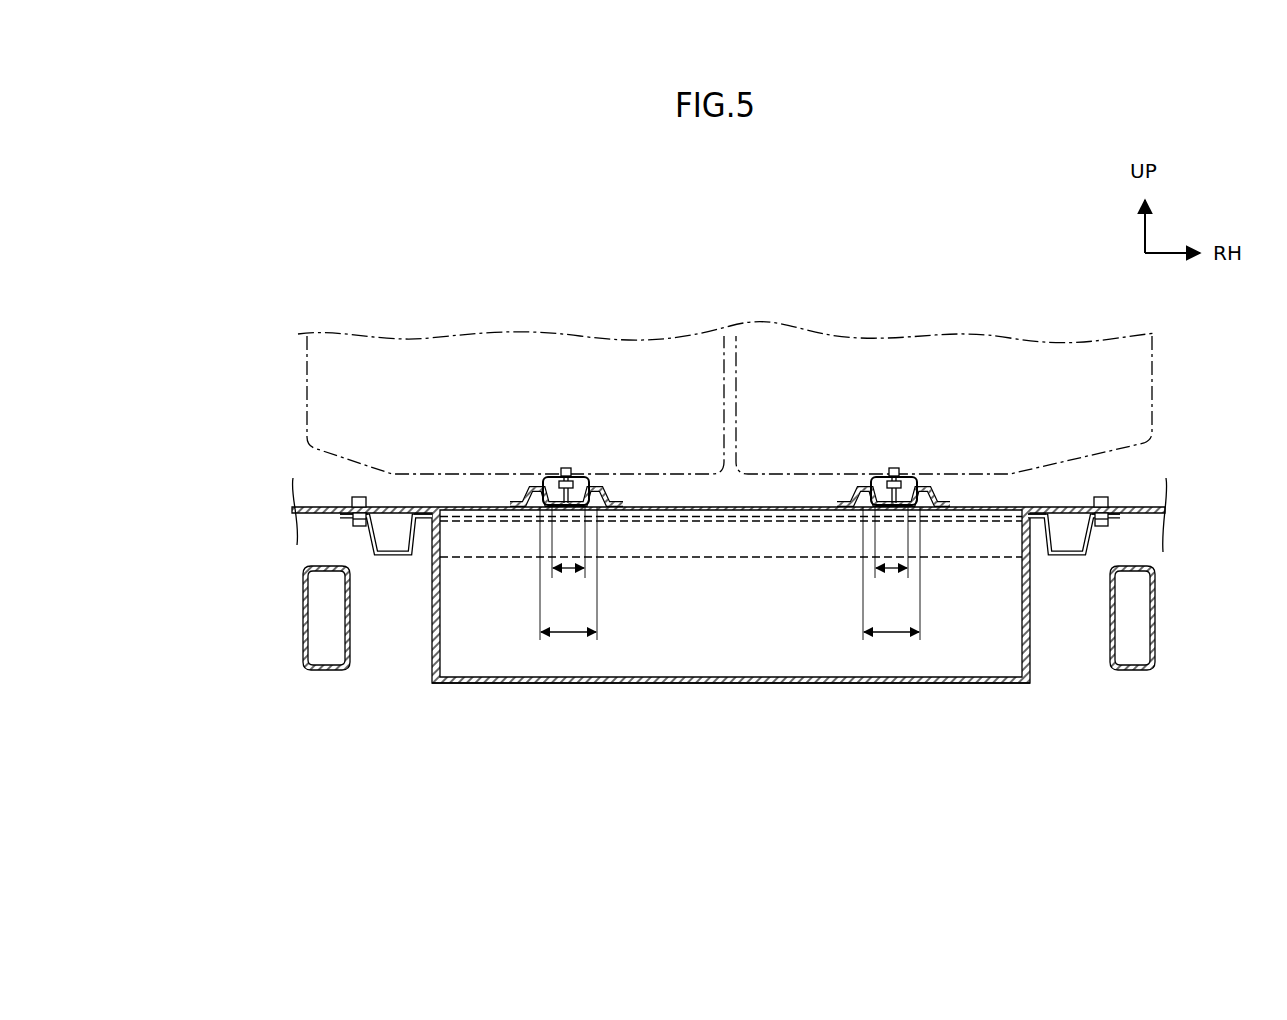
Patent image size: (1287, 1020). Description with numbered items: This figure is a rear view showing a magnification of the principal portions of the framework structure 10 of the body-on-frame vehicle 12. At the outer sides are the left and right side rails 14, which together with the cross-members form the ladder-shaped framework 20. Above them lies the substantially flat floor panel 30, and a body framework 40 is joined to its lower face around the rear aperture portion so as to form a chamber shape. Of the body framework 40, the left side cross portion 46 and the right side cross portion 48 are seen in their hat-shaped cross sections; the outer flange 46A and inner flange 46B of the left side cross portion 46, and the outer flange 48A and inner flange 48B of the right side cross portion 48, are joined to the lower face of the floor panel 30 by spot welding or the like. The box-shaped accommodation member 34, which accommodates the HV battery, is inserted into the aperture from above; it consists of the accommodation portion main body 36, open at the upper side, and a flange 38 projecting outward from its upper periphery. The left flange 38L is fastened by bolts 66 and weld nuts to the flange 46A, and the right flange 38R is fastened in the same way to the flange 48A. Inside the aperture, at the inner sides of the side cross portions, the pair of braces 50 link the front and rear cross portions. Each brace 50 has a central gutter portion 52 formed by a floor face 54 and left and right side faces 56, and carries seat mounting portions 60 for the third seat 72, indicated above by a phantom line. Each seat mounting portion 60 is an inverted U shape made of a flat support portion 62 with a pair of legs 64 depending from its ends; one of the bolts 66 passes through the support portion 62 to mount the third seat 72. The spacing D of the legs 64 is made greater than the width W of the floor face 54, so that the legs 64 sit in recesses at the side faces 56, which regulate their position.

The framework structure 10 is at (689, 627).
The body-on-frame vehicle 12 is at (797, 283).
The side rails 14 is at (327, 672).
The framework 20 is at (691, 678).
The floor panel 30 is at (315, 507).
The accommodation member 34 is at (682, 686).
The accommodation portion main body 36 is at (830, 684).
The flange 38 is at (730, 591).
The flange 38L is at (328, 591).
The flange 38R is at (1129, 544).
The body framework 40 is at (328, 642).
The left side cross portion 46 is at (383, 578).
The flange 46A is at (350, 515).
The flange 46B is at (425, 520).
The right side cross portion 48 is at (1069, 556).
The flange 48A is at (1110, 515).
The flange 48B is at (1035, 520).
The brace 50 is at (728, 479).
The gutter portion 52 is at (593, 477).
The floor face 54 is at (567, 466).
The side faces 56 is at (581, 496).
The seat mounting portion 60 is at (577, 462).
The support portion 62 is at (538, 472).
The legs 64 is at (532, 510).
The bolts 66 is at (352, 497).
The third seat 72 is at (306, 400).
The width of floor face W is at (572, 578).
The spacing of legs D is at (572, 638).